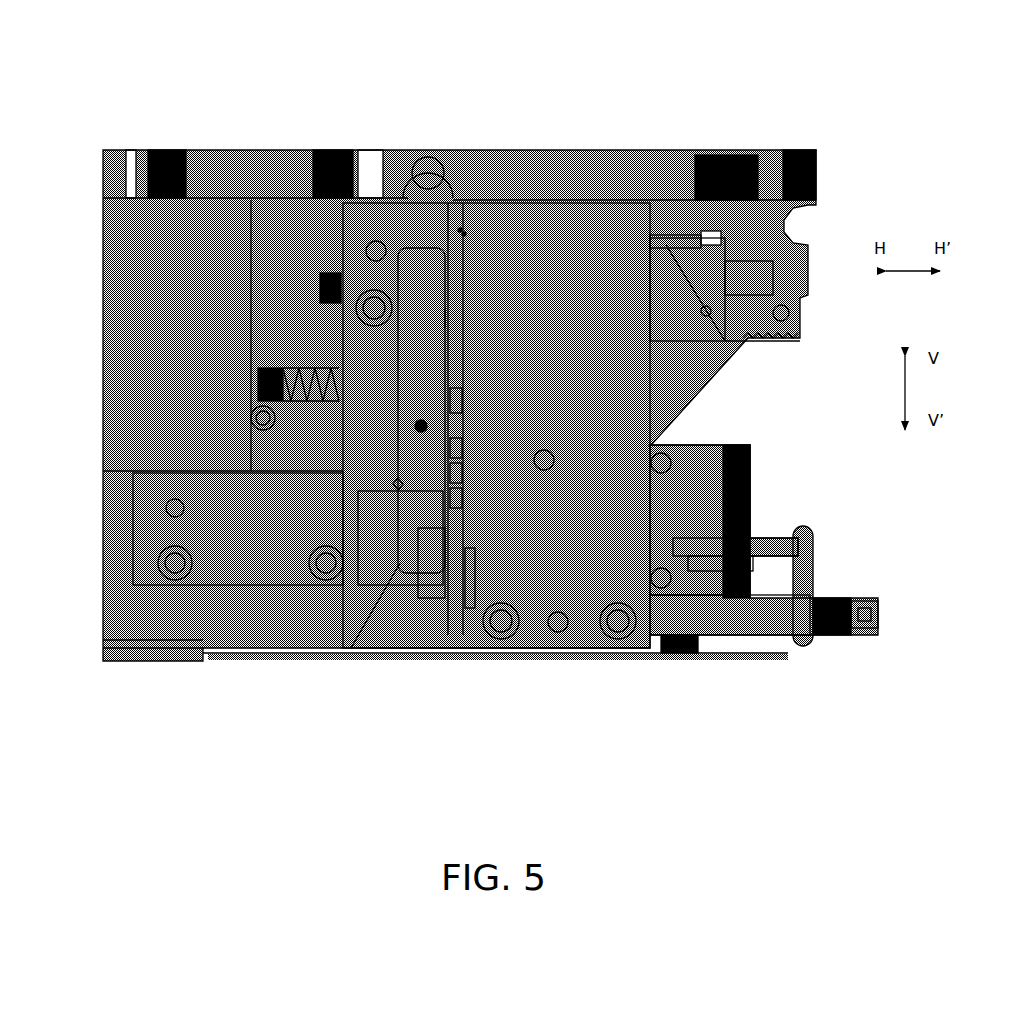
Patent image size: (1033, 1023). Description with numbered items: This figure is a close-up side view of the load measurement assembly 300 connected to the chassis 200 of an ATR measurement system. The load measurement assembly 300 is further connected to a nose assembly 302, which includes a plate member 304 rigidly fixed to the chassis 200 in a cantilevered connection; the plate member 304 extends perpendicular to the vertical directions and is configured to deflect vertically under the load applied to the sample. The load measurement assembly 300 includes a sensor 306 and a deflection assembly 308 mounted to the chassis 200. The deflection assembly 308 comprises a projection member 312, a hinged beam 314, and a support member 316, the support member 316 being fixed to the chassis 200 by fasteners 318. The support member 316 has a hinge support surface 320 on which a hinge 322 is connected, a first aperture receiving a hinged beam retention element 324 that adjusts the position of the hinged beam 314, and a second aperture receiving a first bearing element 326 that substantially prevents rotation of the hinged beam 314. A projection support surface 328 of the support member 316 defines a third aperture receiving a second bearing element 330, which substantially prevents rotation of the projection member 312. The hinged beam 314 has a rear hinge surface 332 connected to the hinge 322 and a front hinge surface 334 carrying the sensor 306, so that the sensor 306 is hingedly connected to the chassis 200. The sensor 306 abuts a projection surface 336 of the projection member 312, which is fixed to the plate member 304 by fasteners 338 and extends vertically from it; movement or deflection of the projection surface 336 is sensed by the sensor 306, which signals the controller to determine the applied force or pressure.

The chassis 200 is at (240, 146).
The load measurement assembly 300 is at (190, 462).
The nose assembly 302 is at (831, 588).
The plate member 304 is at (818, 630).
The sensor 306 is at (445, 391).
The deflection assembly 308 is at (661, 697).
The projection member 312 is at (590, 405).
The hinged beam 314 is at (420, 316).
The support member 316 is at (260, 503).
The fasteners 318 is at (318, 572).
The hinge support surface 320 is at (392, 482).
The hinge 322 is at (390, 443).
The hinged beam retention element 324 is at (260, 365).
The first bearing element 326 is at (308, 270).
The projection support surface 328 is at (452, 222).
The second bearing element 330 is at (456, 226).
The rear hinge surface 332 is at (390, 413).
The front hinge surface 334 is at (437, 312).
The projection surface 336 is at (458, 560).
The fasteners 338 is at (610, 632).